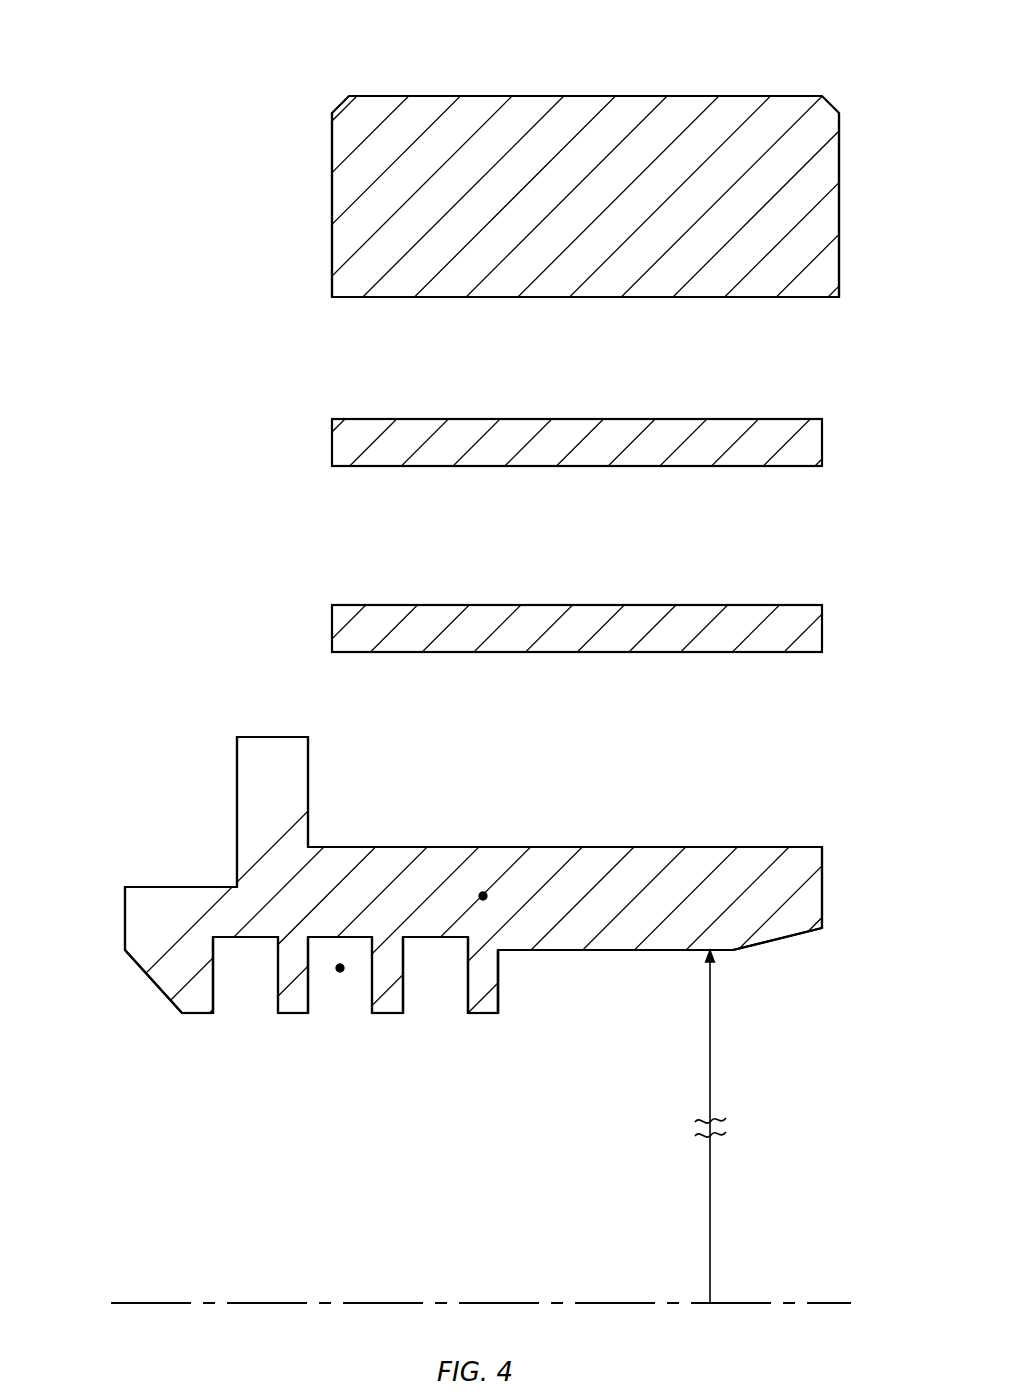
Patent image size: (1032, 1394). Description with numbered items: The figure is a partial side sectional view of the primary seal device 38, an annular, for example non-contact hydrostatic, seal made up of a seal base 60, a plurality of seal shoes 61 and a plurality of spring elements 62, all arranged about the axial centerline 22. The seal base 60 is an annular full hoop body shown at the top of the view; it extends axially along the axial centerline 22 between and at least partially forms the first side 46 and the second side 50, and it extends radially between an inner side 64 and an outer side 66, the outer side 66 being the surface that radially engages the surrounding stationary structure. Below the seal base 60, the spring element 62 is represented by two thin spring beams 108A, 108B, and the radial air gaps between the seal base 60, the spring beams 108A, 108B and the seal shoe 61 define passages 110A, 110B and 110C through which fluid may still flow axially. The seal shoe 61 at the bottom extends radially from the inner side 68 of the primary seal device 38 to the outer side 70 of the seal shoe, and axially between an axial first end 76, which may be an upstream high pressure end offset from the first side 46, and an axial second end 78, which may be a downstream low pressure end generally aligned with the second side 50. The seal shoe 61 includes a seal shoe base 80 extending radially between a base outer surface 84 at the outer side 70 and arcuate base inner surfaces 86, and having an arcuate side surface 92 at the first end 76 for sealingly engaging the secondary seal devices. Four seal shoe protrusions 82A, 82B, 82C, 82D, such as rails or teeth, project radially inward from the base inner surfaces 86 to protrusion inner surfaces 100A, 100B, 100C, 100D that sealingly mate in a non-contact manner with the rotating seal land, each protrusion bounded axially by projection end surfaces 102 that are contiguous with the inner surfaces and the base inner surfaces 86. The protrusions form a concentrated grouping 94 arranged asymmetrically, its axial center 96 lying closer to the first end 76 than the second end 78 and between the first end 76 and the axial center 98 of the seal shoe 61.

The axial centerline 22 is at (824, 1303).
The primary seal device 38 is at (592, 155).
The first side 46 is at (332, 193).
The second side 50 is at (839, 170).
The seal base 60 is at (635, 84).
The seal shoe 61 is at (160, 1020).
The spring element 62 is at (568, 535).
The inner side of the seal base 64 is at (468, 297).
The outer side of the seal base 66 is at (541, 96).
The inner side of the primary seal device 68 is at (515, 1029).
The outer side of the seal shoe 70 is at (525, 900).
The base outer surface 84 is at (640, 847).
The axial first end of the seal shoe 76 is at (125, 925).
The axial second end of the seal shoe 78 is at (822, 898).
The seal shoe base 80 is at (409, 836).
The seal shoe protrusion 82A is at (207, 1013).
The seal shoe protrusion 82B is at (302, 1013).
The seal shoe protrusion 82C is at (393, 1013).
The seal shoe protrusion 82D is at (492, 1013).
The base inner surface 86 is at (257, 937).
The side surface 92 is at (237, 790).
The concentrated grouping 94 is at (182, 1117).
The axial center of the grouping 96 is at (340, 968).
The axial center of the seal shoe 98 is at (483, 896).
The protrusion inner surface 100A is at (195, 1013).
The protrusion inner surface 100B is at (287, 1013).
The protrusion inner surface 100C is at (382, 1013).
The protrusion inner surface 100D is at (475, 1013).
The projection end surface 102 is at (462, 976).
The spring beam 108A is at (332, 452).
The spring beam 108B is at (332, 623).
The passage 110A is at (558, 363).
The passage 110B is at (558, 543).
The passage 110C is at (549, 708).